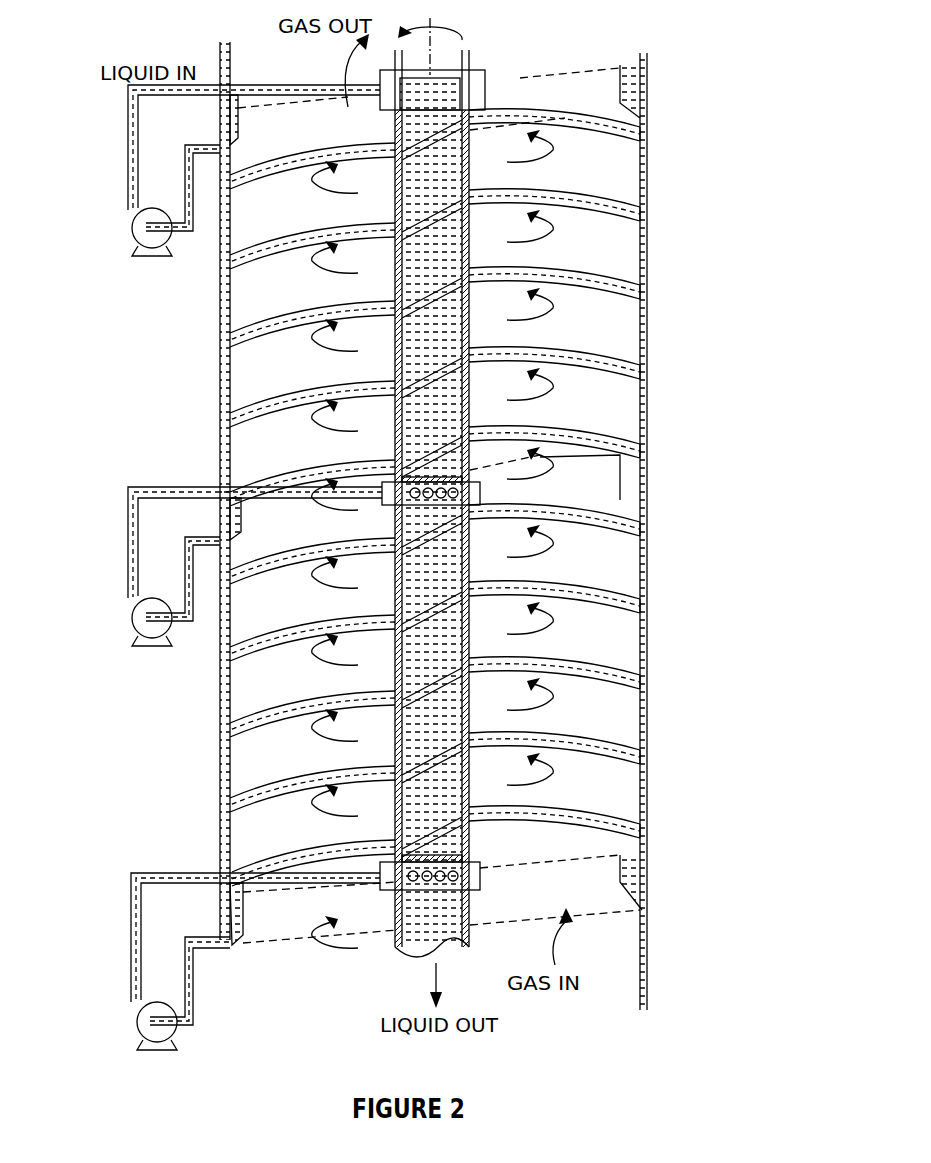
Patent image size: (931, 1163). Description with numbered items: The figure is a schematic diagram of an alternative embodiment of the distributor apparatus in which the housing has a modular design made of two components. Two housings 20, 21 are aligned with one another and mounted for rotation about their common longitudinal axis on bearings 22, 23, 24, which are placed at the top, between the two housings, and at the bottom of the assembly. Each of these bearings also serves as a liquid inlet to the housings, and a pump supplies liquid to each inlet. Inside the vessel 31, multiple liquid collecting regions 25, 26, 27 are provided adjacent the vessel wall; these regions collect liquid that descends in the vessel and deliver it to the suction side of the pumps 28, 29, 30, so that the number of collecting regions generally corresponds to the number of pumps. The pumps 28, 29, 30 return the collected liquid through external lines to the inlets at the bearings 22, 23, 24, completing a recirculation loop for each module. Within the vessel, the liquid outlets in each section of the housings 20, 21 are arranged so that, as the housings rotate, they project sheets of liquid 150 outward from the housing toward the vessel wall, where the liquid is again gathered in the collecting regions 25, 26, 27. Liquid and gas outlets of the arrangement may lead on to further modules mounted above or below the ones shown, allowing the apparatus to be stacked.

The housing 20 is at (470, 243).
The housing 21 is at (470, 633).
The bearing 22 is at (485, 97).
The bearing 23 is at (483, 493).
The bearing 24 is at (483, 882).
The liquid collecting region 25 is at (217, 138).
The liquid collecting region 26 is at (232, 535).
The liquid collecting region 27 is at (240, 940).
The pump 28 is at (160, 250).
The pump 29 is at (140, 638).
The pump 30 is at (155, 1047).
The vessel 31 is at (647, 570).
The sheets of liquid 150 is at (592, 433).